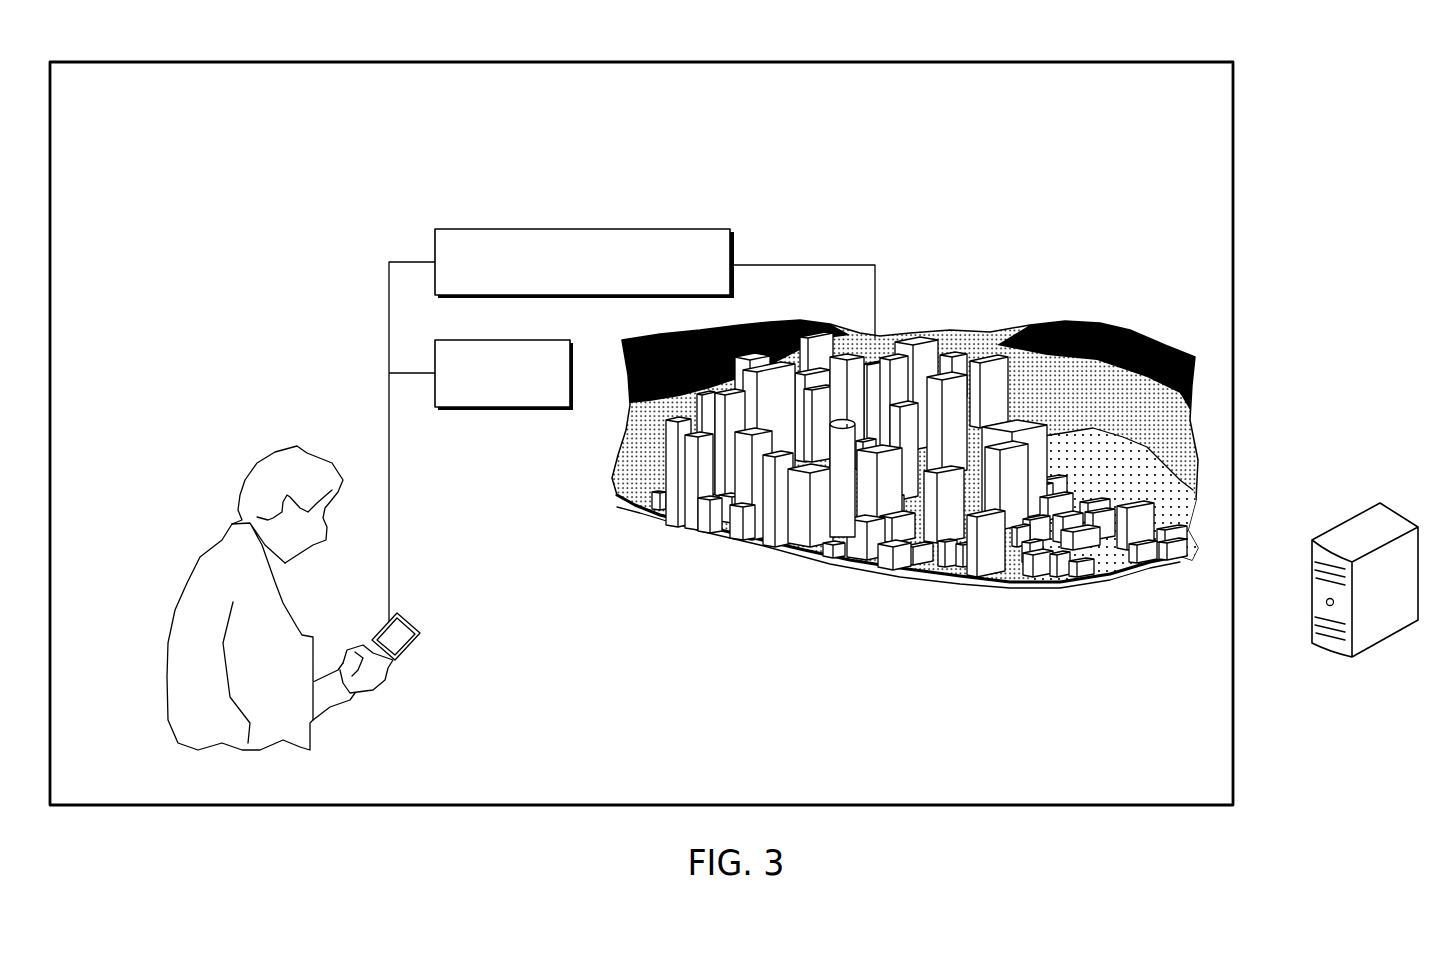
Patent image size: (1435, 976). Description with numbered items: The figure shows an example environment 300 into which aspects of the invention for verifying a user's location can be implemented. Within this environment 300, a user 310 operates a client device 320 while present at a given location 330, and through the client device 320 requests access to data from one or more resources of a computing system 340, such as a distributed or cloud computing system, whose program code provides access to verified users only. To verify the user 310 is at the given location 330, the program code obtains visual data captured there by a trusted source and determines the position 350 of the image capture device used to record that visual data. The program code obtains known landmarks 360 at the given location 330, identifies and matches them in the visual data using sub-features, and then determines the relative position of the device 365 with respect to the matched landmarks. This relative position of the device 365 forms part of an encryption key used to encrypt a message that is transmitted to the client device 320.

The environment 300 is at (1325, 38).
The user 310 is at (168, 648).
The client device 320 is at (410, 640).
The given location 330 is at (730, 110).
The computing system 340 is at (1362, 518).
The position of image capture device 350 is at (507, 407).
The known landmarks 360 is at (893, 574).
The relative position of device to matched landmarks 365 is at (603, 229).